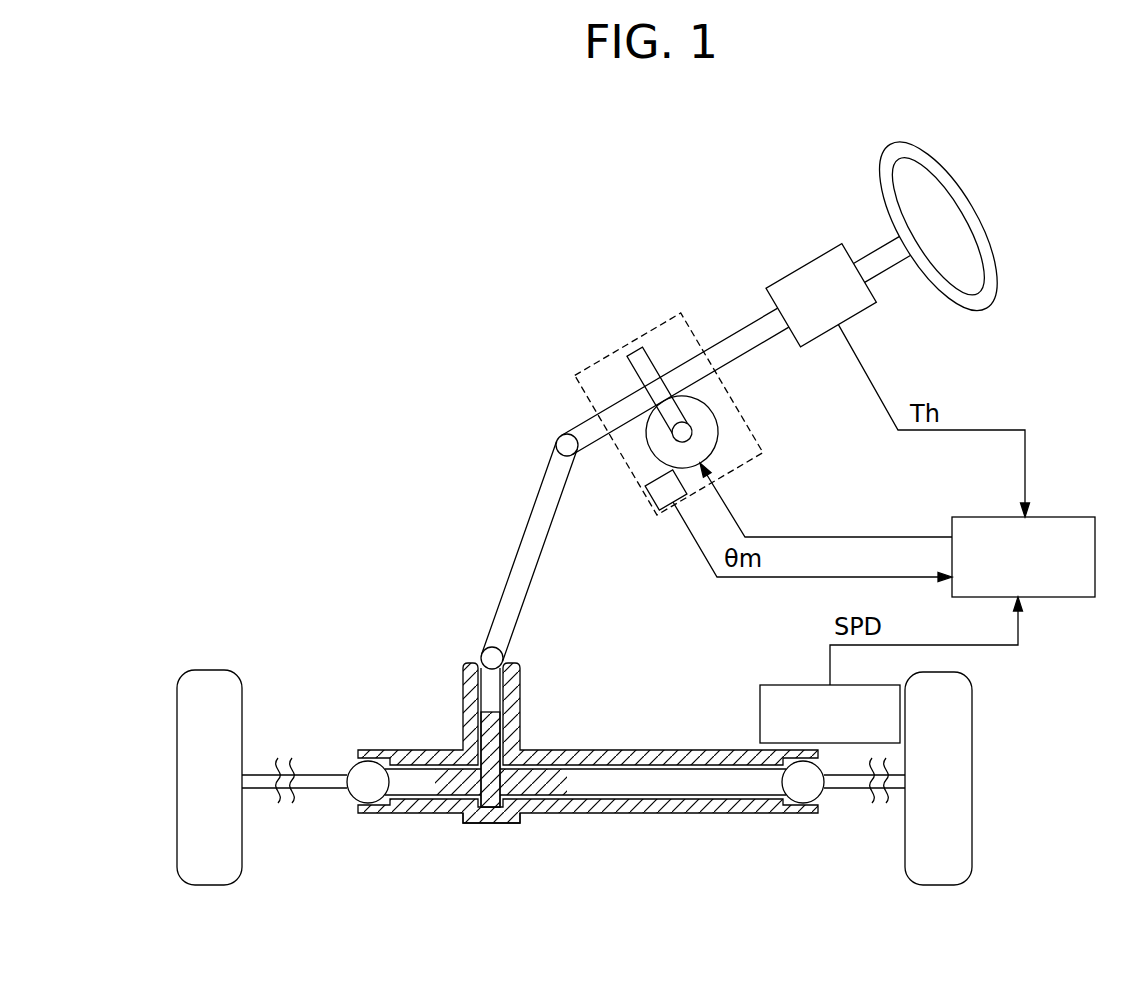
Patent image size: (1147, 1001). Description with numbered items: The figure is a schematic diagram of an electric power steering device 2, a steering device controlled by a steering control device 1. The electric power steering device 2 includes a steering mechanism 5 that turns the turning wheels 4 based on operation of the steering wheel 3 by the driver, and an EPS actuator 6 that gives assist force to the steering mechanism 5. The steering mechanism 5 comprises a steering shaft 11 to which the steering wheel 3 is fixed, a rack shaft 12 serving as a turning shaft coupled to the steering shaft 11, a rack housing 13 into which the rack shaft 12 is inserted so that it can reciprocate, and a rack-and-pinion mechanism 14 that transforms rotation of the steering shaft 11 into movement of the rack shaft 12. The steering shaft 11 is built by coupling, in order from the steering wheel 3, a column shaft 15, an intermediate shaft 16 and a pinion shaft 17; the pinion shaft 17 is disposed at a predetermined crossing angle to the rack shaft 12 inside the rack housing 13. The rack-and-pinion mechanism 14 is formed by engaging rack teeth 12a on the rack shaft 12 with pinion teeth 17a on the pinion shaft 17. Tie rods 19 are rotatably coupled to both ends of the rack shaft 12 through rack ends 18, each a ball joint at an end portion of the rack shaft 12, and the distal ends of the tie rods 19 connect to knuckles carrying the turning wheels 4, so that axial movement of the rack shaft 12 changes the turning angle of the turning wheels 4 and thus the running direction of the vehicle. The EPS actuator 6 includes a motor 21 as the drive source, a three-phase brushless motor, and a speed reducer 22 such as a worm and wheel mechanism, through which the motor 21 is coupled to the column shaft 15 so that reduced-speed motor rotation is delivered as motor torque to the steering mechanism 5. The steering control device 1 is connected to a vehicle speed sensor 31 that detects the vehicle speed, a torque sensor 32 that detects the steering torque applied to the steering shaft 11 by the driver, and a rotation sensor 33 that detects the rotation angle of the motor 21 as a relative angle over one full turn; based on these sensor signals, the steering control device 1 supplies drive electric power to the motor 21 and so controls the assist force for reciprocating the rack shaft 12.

The steering control device 1 is at (1096, 535).
The electric power steering device 2 is at (292, 275).
The steering wheel 3 is at (958, 188).
The turning wheels 4 is at (210, 885).
The steering mechanism 5 is at (325, 590).
The EPS actuator 6 is at (660, 327).
The steering shaft 11 is at (436, 440).
The rack shaft 12 is at (611, 767).
The rack teeth 12a is at (440, 800).
The rack housing 13 is at (647, 750).
The rack-and-pinion mechanism 14 is at (513, 805).
The column shaft 15 is at (577, 423).
The intermediate shaft 16 is at (532, 545).
The pinion shaft 17 is at (486, 662).
The pinion teeth 17a is at (492, 823).
The rack ends 18 is at (352, 803).
The tie rods 19 is at (258, 792).
The motor 21 is at (723, 417).
The speed reducer 22 is at (670, 435).
The vehicle speed sensor 31 is at (775, 685).
The torque sensor 32 is at (808, 265).
The rotation sensor 33 is at (657, 511).